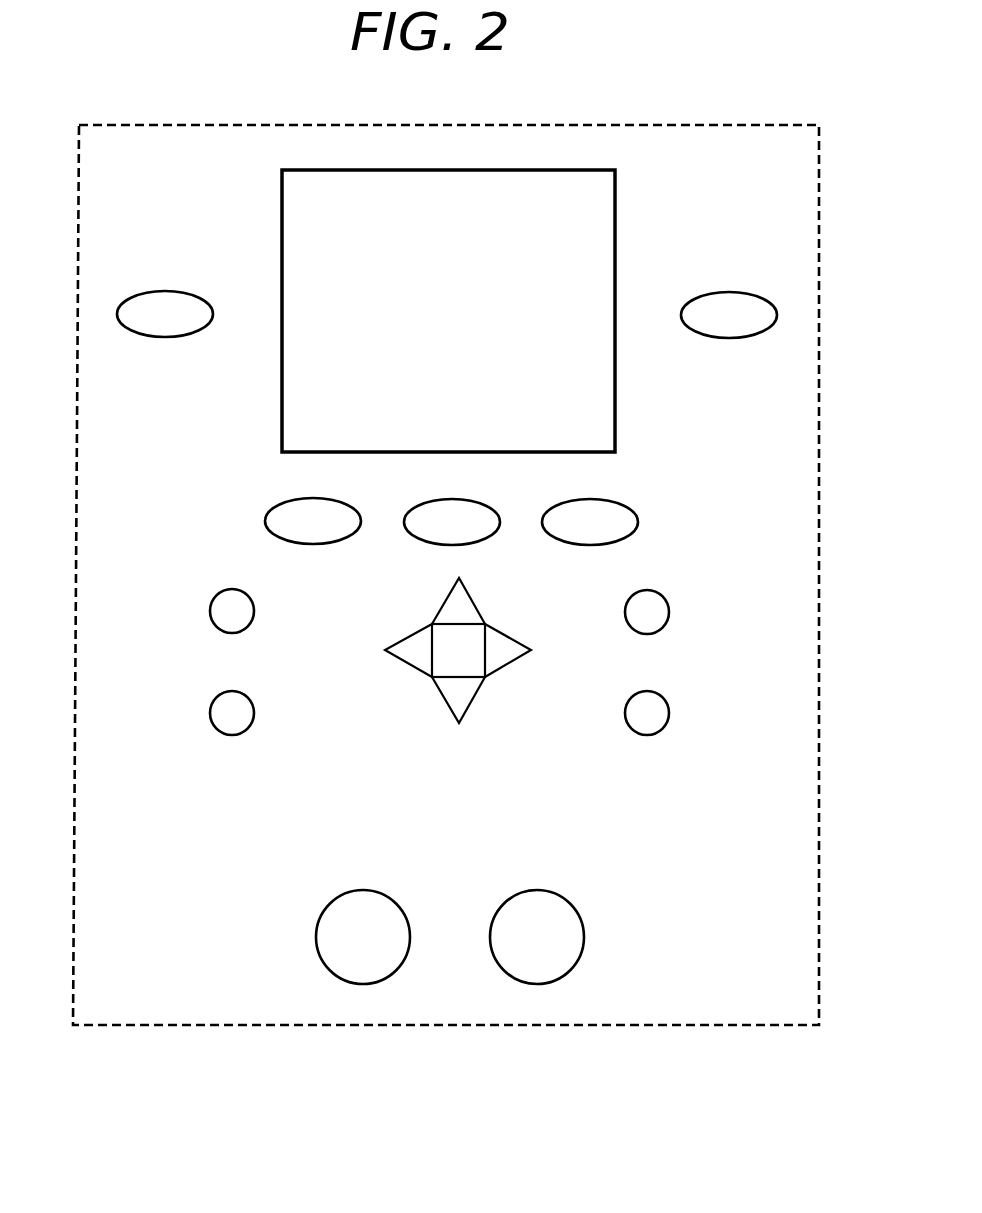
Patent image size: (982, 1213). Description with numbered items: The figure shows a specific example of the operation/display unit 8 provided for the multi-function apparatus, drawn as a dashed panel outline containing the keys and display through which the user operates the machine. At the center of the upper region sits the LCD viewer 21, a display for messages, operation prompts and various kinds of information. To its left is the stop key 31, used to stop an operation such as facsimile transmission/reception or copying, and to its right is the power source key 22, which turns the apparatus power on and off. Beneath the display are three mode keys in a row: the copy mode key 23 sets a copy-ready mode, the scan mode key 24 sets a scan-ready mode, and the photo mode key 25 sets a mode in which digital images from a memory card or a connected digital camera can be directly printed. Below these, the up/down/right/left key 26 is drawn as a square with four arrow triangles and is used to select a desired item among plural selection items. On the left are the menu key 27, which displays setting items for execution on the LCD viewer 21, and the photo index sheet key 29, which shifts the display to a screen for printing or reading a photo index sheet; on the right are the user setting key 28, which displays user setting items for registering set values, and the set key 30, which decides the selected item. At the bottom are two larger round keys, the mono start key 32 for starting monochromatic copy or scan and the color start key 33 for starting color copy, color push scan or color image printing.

The operation/display unit 8 is at (148, 125).
The LCD viewer 21 is at (615, 218).
The power source key 22 is at (777, 315).
The copy mode key 23 is at (265, 521).
The scan mode key 24 is at (490, 505).
The photo mode key 25 is at (638, 522).
The up/down/right/left key 26 is at (432, 624).
The menu key 27 is at (210, 611).
The user setting key 28 is at (670, 610).
The photo index sheet key 29 is at (210, 713).
The set key 30 is at (670, 712).
The stop key 31 is at (117, 314).
The mono start key 32 is at (363, 984).
The color start key 33 is at (537, 984).